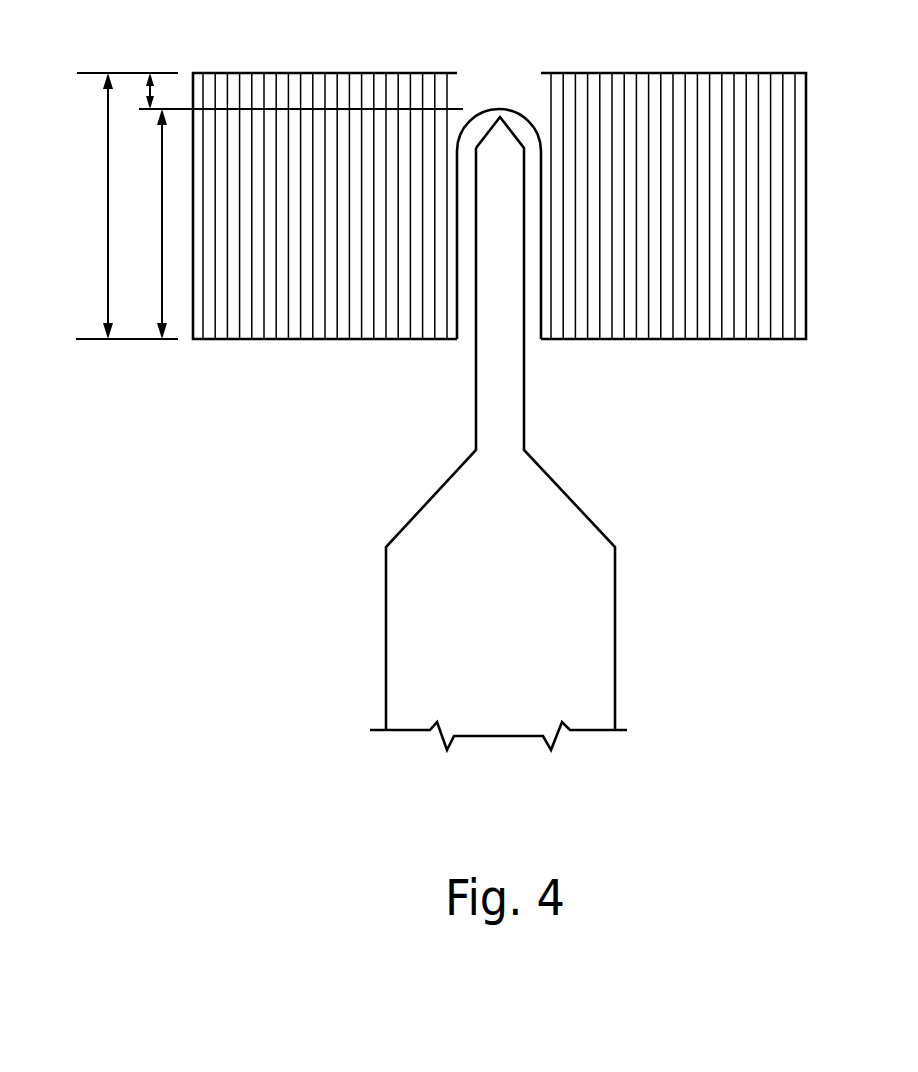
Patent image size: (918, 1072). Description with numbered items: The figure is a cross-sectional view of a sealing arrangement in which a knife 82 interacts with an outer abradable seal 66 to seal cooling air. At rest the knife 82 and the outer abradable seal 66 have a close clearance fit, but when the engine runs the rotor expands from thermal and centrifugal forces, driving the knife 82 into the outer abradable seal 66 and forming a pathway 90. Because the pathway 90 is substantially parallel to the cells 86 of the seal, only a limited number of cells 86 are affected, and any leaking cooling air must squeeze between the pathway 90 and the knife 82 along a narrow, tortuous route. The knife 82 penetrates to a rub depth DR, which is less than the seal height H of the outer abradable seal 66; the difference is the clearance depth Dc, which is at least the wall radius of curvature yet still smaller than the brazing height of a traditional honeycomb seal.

The outer abradable seal 66 is at (517, 239).
The cells 86 is at (255, 333).
The pathway 90 is at (468, 320).
The knife 82 is at (615, 622).
The seal height H is at (108, 216).
The rub depth DR is at (162, 276).
The clearance depth Dc is at (150, 93).